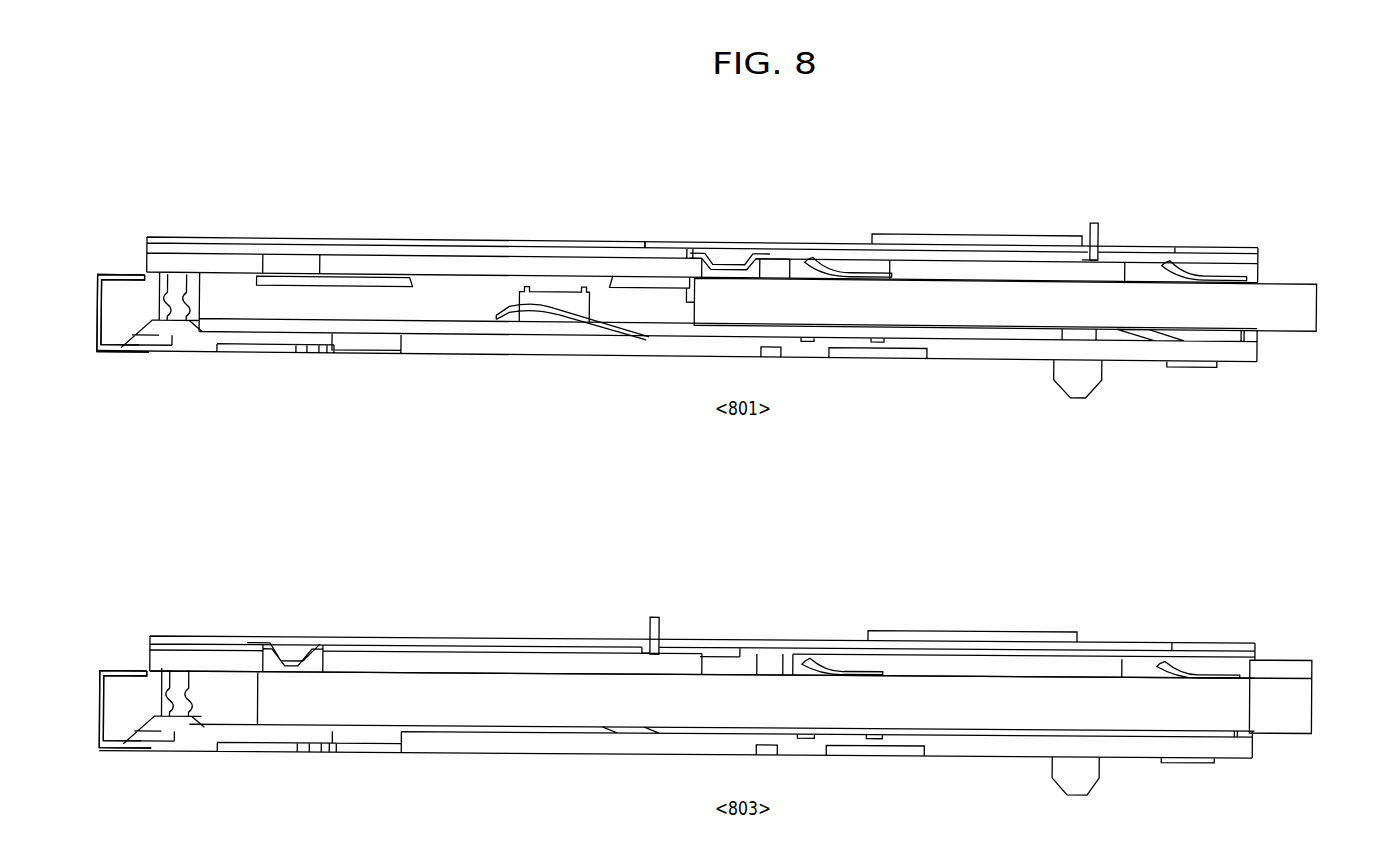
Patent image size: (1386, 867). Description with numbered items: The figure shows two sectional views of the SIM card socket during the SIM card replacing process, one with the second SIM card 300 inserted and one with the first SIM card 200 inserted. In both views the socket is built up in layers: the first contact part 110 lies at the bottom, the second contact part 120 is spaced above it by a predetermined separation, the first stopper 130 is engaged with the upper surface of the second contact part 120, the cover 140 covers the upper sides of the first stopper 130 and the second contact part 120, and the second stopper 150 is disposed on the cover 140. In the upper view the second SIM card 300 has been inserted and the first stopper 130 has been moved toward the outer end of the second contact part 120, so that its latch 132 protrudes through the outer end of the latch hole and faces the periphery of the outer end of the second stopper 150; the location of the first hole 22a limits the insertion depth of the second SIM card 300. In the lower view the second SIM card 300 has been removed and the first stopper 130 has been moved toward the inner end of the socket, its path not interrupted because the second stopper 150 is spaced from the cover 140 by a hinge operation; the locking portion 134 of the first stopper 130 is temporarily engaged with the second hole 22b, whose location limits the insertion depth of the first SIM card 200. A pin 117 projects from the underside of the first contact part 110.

The first contact part 110 is at (118, 320).
The fixing pin 117 is at (1082, 393).
The second contact part 120 is at (998, 265).
The first stopper 130 is at (400, 645).
The latch 132 is at (1097, 232).
The locking portion 134 is at (733, 260).
The cover 140 is at (667, 245).
The second stopper 150 is at (917, 237).
The first hole 22a is at (710, 272).
The second hole 22b is at (295, 263).
The first SIM card 200 is at (1290, 707).
The second SIM card 300 is at (1297, 308).